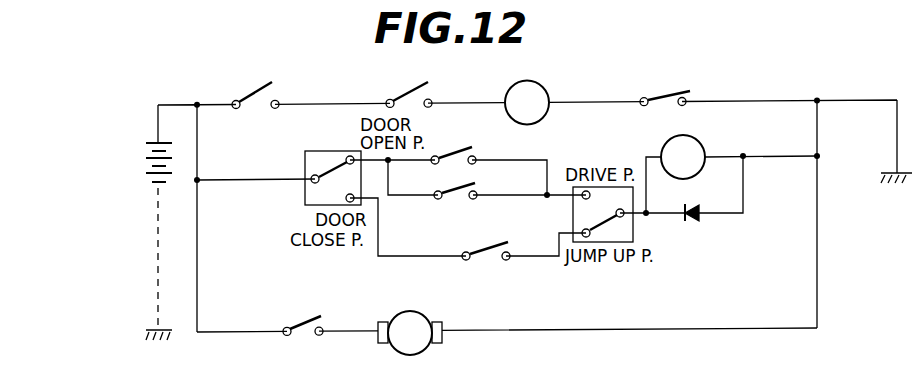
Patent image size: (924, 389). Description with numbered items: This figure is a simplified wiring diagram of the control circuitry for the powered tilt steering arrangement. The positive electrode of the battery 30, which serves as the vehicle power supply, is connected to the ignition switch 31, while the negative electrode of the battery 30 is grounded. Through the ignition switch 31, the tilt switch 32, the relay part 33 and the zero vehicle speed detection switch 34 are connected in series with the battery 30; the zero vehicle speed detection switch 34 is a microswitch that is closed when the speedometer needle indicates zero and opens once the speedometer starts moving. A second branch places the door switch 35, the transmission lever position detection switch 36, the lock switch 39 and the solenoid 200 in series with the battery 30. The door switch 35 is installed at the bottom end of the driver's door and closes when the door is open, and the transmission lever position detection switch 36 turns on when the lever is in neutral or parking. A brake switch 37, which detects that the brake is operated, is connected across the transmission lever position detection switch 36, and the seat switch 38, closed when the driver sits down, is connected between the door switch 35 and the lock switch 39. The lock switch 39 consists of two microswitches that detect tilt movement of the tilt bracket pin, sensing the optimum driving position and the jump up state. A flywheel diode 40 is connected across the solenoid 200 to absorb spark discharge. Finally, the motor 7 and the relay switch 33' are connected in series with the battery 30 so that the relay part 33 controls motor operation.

The battery 30 is at (146, 168).
The ignition switch 31 is at (246, 96).
The tilt switch 32 is at (400, 97).
The relay part 33 is at (544, 92).
The zero vehicle speed detection switch 34 is at (656, 97).
The door switch 35 is at (332, 171).
The transmission lever position detection switch 36 is at (448, 153).
The brake switch 37 is at (460, 188).
The seat switch 38 is at (483, 248).
The lock switch 39 is at (598, 222).
The solenoid 200 is at (701, 143).
The flywheel diode 40 is at (691, 217).
The relay switch 33' is at (300, 309).
The motor 7 is at (410, 311).